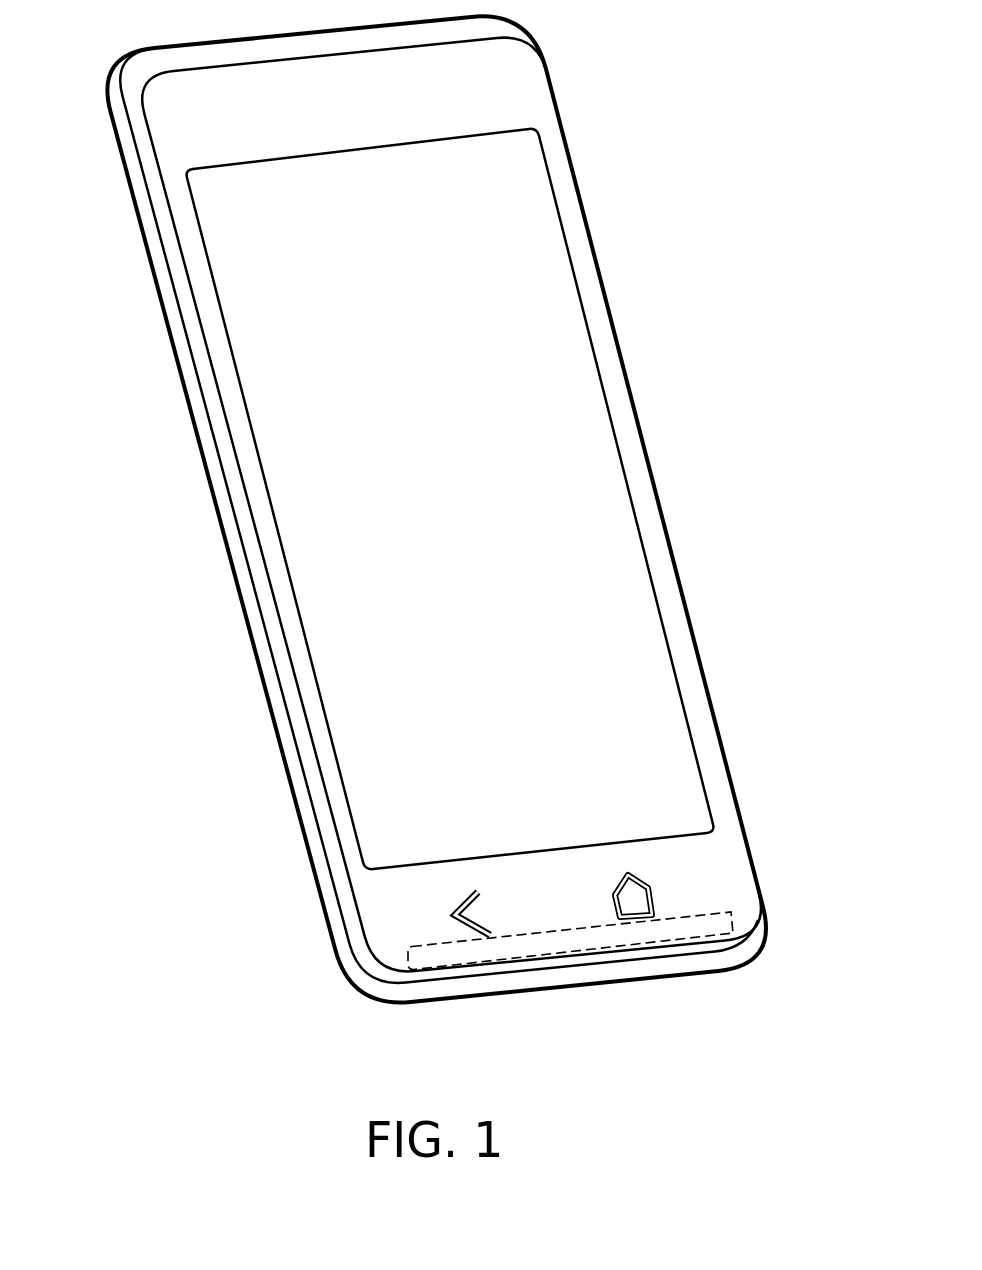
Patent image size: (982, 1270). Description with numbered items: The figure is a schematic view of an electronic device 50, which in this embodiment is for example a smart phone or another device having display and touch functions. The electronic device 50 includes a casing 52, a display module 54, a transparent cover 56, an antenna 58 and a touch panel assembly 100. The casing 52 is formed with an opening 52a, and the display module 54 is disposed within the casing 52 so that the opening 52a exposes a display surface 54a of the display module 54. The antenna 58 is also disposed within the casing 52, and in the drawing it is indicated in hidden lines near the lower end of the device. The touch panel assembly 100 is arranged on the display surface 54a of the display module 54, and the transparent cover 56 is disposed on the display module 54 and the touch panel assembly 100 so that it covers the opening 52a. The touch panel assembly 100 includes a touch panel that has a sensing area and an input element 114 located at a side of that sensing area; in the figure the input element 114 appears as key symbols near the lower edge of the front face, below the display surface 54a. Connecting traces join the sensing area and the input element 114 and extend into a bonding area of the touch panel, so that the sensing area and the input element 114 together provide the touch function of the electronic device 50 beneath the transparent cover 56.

The electronic device 50 is at (472, 543).
The casing 52 is at (310, 823).
The opening 52a is at (315, 765).
The display module 54 is at (337, 577).
The display surface 54a is at (328, 480).
The transparent cover 56 is at (285, 383).
The antenna 58 is at (405, 953).
The touch panel assembly 100 is at (413, 904).
The input element 114 is at (492, 928).